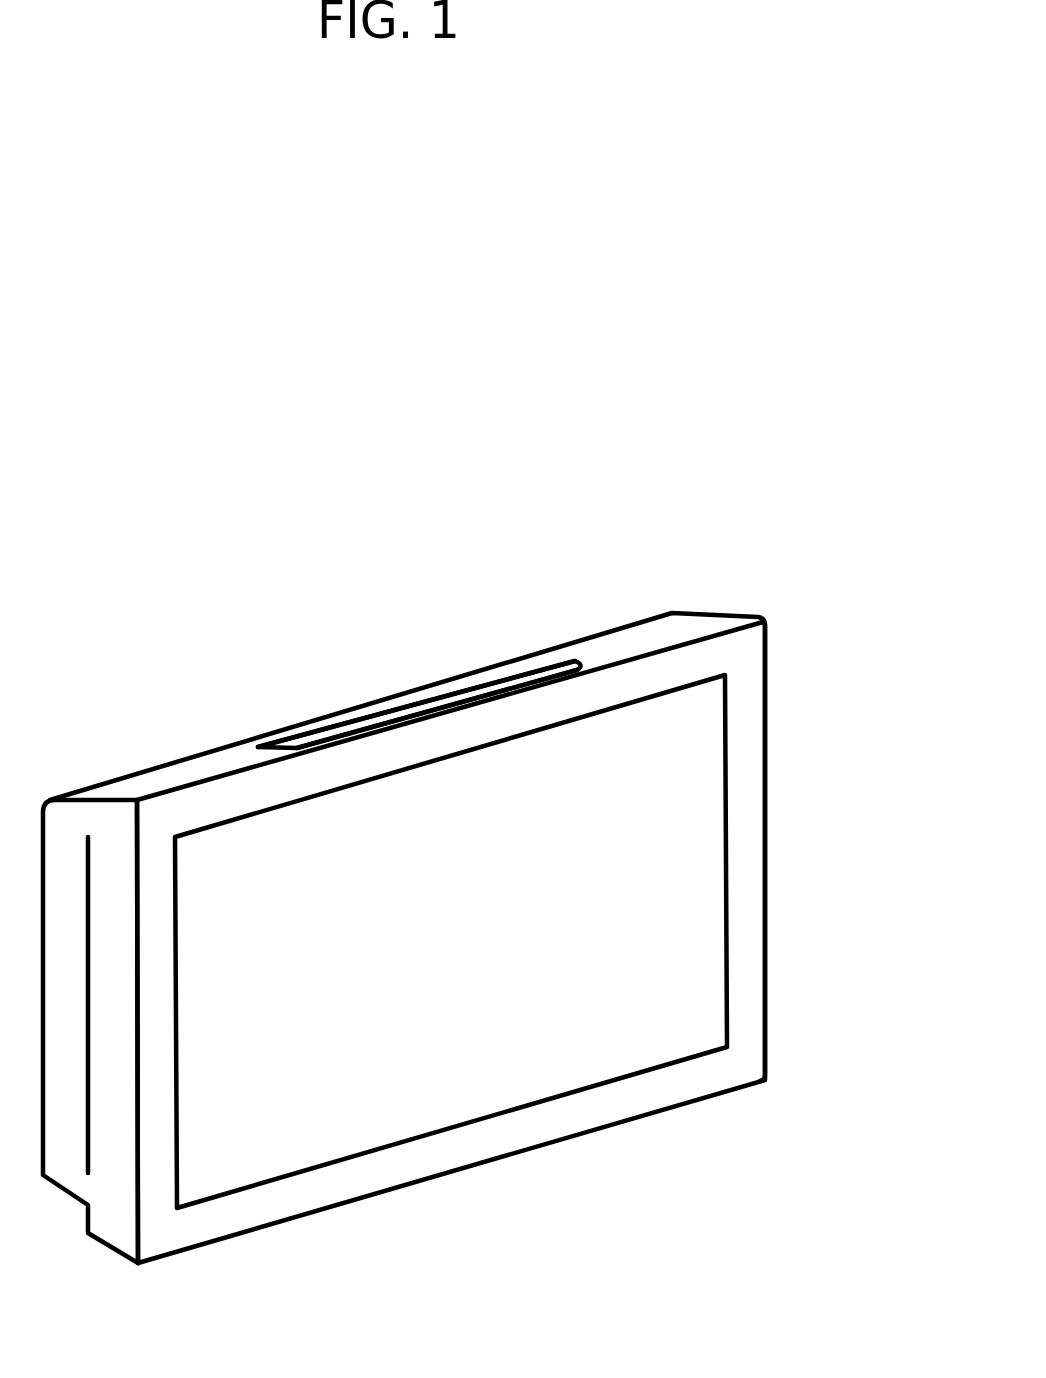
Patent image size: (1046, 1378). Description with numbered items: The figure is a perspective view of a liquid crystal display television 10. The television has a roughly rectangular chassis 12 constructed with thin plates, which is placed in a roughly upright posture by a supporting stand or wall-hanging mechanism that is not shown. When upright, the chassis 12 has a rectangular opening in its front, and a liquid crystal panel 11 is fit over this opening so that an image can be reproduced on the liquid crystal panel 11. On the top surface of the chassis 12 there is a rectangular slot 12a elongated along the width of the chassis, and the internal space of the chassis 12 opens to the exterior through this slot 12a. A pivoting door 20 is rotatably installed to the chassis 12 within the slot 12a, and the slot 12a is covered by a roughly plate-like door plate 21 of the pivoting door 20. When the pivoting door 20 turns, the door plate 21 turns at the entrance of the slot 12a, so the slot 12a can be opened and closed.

The liquid crystal display television 10 is at (765, 834).
The liquid crystal panel 11 is at (387, 1115).
The chassis 12 is at (637, 1103).
The slot 12a is at (562, 662).
The pivoting door 20 is at (502, 670).
The door plate 21 is at (345, 718).